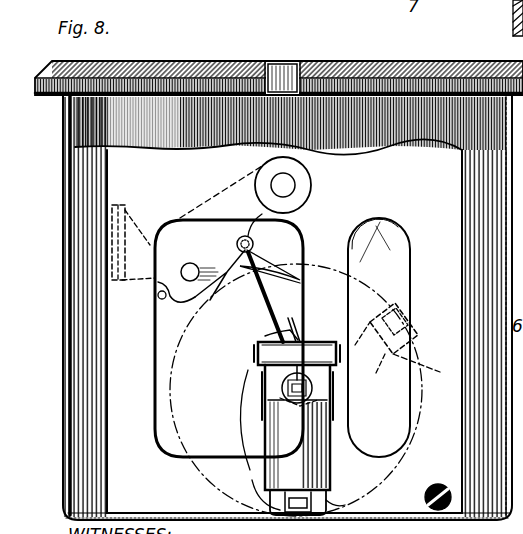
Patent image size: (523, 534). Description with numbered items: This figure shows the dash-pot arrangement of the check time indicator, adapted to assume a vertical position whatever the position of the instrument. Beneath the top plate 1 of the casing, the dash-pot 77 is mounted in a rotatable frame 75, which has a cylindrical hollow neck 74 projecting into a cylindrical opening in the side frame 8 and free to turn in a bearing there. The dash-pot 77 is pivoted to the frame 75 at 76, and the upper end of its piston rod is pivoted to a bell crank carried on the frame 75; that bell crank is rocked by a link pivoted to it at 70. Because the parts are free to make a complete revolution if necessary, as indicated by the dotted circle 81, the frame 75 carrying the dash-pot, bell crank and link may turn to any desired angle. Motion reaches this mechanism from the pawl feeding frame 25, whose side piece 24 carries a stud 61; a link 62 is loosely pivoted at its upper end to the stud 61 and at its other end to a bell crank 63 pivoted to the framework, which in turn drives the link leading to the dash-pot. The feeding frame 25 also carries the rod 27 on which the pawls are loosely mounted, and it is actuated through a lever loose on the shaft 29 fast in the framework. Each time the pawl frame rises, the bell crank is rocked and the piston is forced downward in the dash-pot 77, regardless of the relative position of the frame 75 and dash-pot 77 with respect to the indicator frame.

The top plate 1 is at (231, 61).
The side frame 8 is at (117, 312).
The side piece of feeding frame 24 is at (221, 275).
The feeding frame 25 is at (125, 208).
The rod 27 is at (190, 280).
The shaft 29 is at (285, 185).
The stud 61 is at (254, 244).
The link 62 is at (270, 318).
The bell crank 63 is at (265, 336).
The pivot of link 69 to bell crank 70 is at (282, 390).
The cylindrical hollow neck 74 is at (312, 388).
The rotatable frame 75 is at (318, 500).
The dash-pot pivot 76 is at (275, 505).
The dash-pot 77 is at (392, 375).
The circle 81 is at (400, 478).